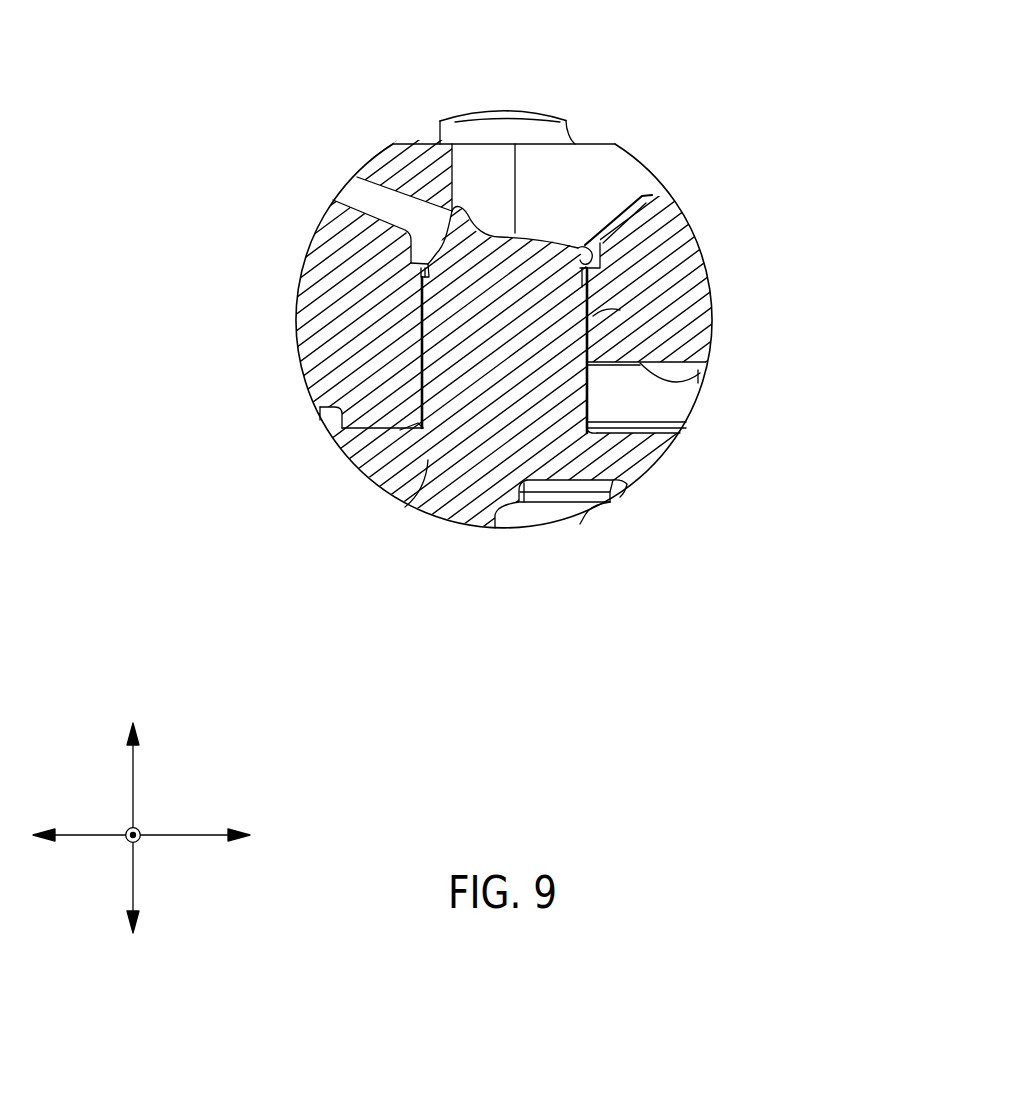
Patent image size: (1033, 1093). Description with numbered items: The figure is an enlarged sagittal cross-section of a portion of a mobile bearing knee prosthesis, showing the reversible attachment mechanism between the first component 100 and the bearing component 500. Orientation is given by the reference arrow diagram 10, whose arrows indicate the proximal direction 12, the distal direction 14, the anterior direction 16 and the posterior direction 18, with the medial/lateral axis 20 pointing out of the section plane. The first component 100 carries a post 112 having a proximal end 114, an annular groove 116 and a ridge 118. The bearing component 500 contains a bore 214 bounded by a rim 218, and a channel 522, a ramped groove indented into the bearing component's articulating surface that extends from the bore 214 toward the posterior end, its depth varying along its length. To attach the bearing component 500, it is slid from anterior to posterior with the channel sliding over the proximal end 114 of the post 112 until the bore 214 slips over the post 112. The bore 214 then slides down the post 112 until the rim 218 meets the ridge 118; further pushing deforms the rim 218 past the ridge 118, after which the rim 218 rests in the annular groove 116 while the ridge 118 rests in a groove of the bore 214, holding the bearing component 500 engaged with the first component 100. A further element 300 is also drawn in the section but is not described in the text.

The reference arrow diagram 10 is at (95, 700).
The proximal direction 12 is at (134, 777).
The distal direction 14 is at (138, 888).
The anterior direction 16 is at (90, 828).
The posterior direction 18 is at (193, 840).
The medial/lateral axis 20 is at (140, 830).
The first component 100 is at (430, 460).
The post 112 is at (483, 386).
The proximal end 114 is at (523, 235).
The annular groove 116 is at (427, 266).
The ridge 118 is at (582, 247).
The bore 214 is at (690, 291).
The rim 218 is at (603, 263).
The cover 300 is at (398, 195).
The bearing component 500 is at (313, 343).
The channel 522 is at (587, 389).